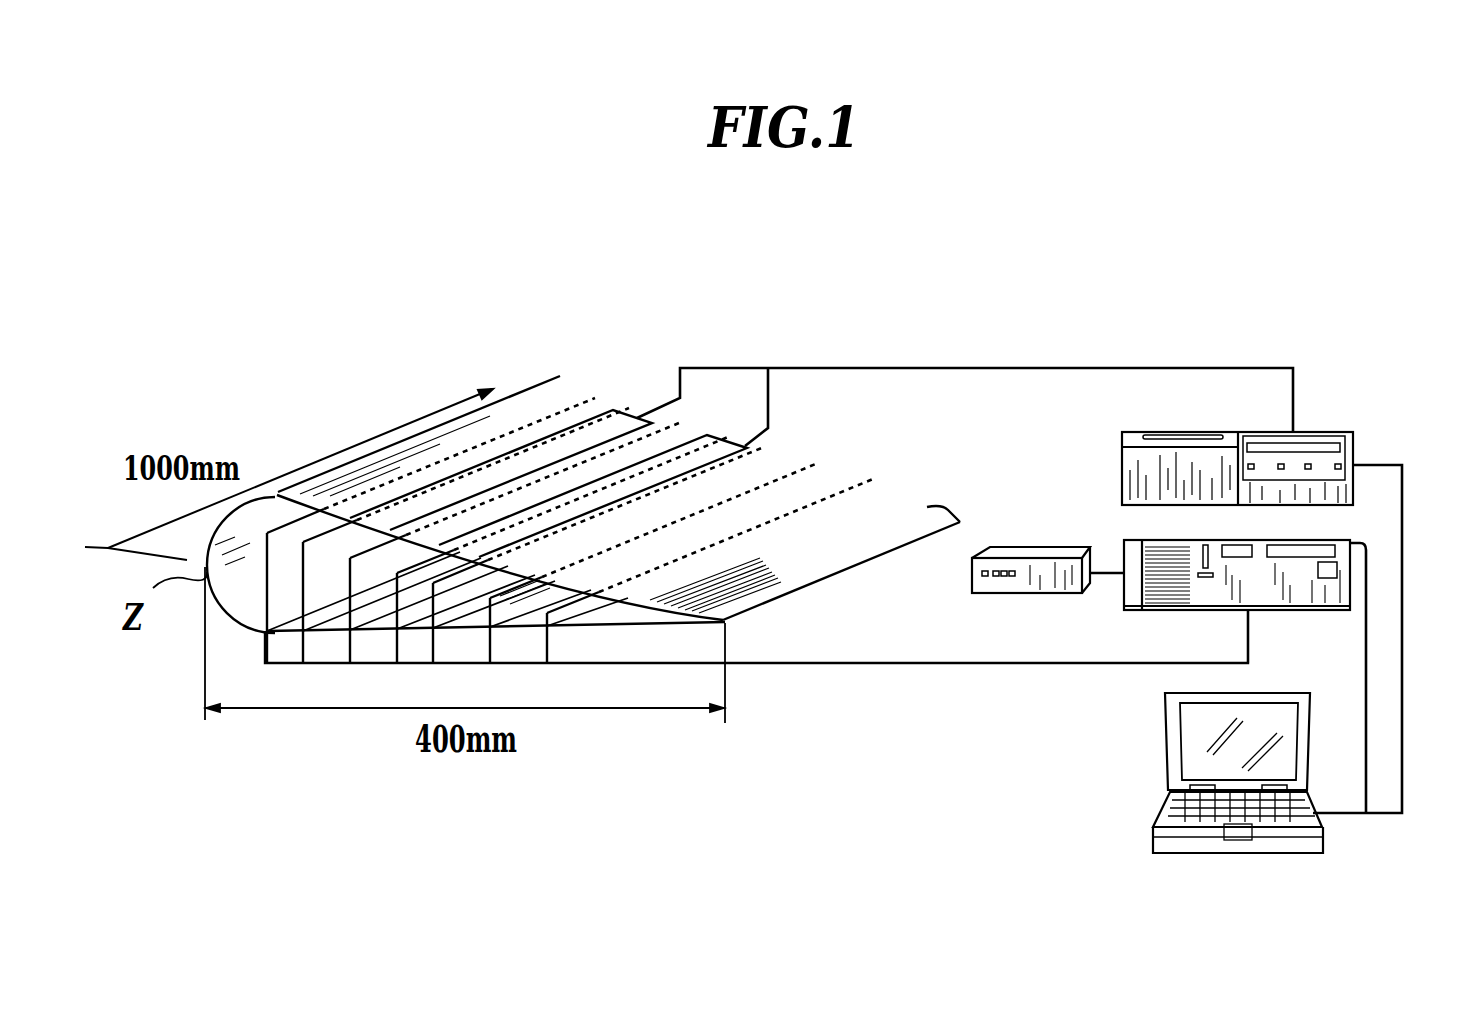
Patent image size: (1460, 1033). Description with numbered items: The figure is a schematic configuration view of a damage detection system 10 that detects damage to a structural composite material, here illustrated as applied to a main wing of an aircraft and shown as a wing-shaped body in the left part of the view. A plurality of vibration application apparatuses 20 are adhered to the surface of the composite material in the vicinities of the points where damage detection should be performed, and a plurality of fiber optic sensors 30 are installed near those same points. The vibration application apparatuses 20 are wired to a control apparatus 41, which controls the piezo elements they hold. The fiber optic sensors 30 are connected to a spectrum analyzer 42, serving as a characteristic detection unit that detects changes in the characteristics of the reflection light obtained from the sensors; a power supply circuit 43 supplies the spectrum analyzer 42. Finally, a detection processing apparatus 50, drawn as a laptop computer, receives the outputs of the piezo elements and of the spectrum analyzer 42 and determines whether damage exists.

The damage detection system 10 is at (1346, 261).
The vibration application apparatus 20 is at (652, 416).
The fiber optic sensor 30 is at (590, 389).
The control apparatus 41 is at (1335, 432).
The spectrum analyzer 42 is at (1366, 556).
The power supply circuit 43 is at (1042, 547).
The detection processing apparatus 50 is at (1165, 745).